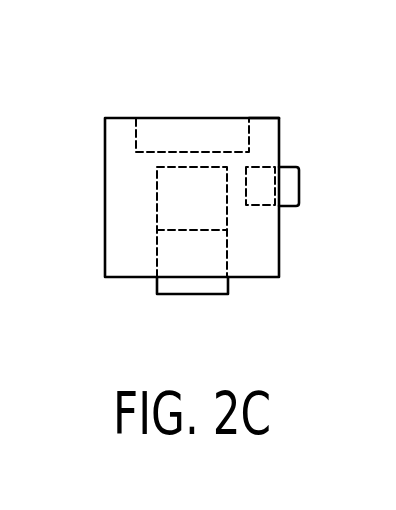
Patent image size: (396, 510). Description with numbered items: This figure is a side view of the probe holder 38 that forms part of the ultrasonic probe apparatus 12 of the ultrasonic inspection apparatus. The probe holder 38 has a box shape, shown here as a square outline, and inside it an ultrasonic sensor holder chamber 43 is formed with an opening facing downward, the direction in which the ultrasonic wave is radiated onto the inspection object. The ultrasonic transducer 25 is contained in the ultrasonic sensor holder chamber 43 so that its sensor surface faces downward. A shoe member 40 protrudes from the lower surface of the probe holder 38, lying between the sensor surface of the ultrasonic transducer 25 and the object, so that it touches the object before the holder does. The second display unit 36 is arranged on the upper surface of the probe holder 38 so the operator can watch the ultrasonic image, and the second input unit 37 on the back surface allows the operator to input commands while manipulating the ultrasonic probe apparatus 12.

The ultrasonic probe apparatus 12 is at (104, 118).
The second display unit 36 is at (189, 124).
The probe holder 38 is at (262, 117).
The ultrasonic sensor holder chamber 43 is at (157, 203).
The ultrasonic transducer 25 is at (228, 212).
The second input unit 37 is at (300, 193).
The shoe member 40 is at (196, 297).